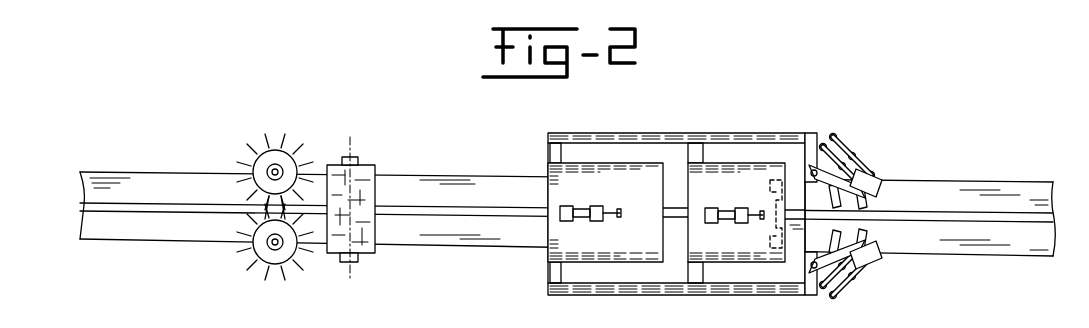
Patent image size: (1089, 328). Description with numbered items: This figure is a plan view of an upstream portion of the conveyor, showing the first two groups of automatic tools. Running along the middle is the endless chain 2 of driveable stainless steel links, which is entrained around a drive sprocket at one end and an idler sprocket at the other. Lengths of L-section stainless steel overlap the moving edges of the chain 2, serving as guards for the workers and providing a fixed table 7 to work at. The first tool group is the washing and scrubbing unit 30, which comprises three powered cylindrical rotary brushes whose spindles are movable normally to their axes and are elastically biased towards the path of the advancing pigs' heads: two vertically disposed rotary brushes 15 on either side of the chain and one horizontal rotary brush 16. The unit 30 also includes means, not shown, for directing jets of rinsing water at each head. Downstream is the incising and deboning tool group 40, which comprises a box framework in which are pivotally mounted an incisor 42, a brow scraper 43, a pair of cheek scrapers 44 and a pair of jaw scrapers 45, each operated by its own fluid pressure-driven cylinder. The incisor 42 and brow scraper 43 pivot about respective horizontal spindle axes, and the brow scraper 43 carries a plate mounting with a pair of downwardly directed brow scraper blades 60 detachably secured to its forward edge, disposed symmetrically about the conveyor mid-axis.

The endless chain 2 is at (990, 220).
The fixed table 7 is at (992, 247).
The vertically disposed rotary brushes 15 is at (253, 165).
The horizontal rotary brush 16 is at (374, 167).
The washing and scrubbing unit 30 is at (276, 203).
The incising and deboning tool group 40 is at (718, 206).
The incisor 42 is at (558, 182).
The brow scraper 43 is at (745, 258).
The cheek scrapers 44 is at (827, 252).
The jaw scrapers 45 is at (877, 195).
The brow scraper blades 60 is at (783, 162).